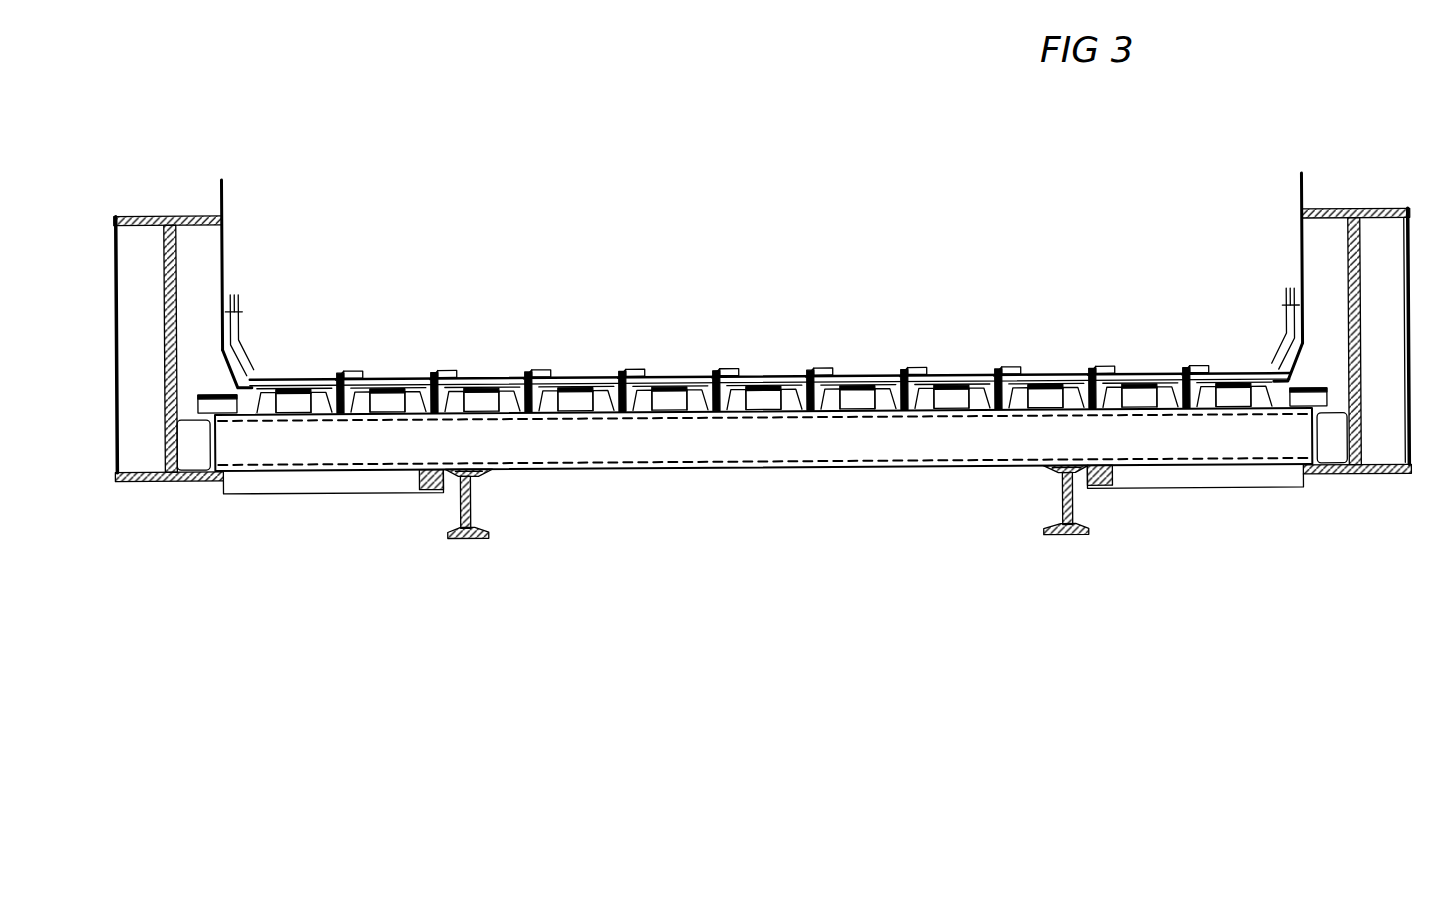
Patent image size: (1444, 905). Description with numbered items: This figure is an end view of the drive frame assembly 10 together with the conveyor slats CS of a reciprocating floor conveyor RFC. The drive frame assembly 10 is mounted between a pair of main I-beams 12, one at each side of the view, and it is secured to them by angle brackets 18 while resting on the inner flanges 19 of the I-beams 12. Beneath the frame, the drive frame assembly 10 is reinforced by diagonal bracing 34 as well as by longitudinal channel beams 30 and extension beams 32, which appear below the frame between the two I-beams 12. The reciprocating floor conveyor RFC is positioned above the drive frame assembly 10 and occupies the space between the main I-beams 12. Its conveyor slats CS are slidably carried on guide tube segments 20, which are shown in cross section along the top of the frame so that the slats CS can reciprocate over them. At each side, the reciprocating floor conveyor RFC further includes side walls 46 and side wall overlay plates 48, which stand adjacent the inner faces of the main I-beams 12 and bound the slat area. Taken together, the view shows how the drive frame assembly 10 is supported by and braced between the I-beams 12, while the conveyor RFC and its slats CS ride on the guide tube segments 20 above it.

The drive frame assembly 10 is at (660, 520).
The main I-beams 12 is at (170, 216).
The angle brackets 18 is at (218, 448).
The inner flanges 19 is at (198, 483).
The guide tube segments 20 is at (782, 385).
The longitudinal channel beams 30 is at (480, 508).
The extension beams 32 is at (458, 505).
The diagonal bracing 34 is at (330, 478).
The side walls 46 is at (224, 238).
The side wall overlay plates 48 is at (240, 343).
The conveyor slats CS is at (600, 388).
The reciprocating floor conveyor RFC is at (875, 355).